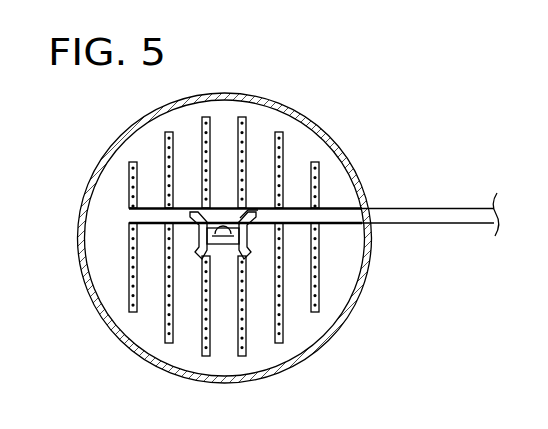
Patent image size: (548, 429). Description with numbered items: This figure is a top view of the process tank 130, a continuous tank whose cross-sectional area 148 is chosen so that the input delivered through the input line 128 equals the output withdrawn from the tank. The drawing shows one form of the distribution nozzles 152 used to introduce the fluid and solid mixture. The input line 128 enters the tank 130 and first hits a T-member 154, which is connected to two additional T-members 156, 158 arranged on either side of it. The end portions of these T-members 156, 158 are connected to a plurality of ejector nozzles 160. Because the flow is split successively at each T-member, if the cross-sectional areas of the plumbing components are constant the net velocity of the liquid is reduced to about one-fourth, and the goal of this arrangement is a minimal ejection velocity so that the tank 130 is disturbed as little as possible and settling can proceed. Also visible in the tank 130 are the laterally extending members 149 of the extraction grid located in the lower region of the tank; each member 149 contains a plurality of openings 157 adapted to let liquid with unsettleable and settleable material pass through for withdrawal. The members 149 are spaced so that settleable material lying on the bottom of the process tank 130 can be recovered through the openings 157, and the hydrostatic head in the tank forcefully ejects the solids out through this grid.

The input line 128 is at (228, 232).
The process tank 130 is at (283, 105).
The cross-sectional area 148 is at (296, 140).
The laterally extending members 149 is at (164, 151).
The distribution nozzles 152 is at (252, 206).
The T-member 154 is at (224, 240).
The T-member 156 is at (205, 243).
The openings 157 is at (130, 270).
The T-member 158 is at (257, 243).
The ejector nozzles 160 is at (192, 212).